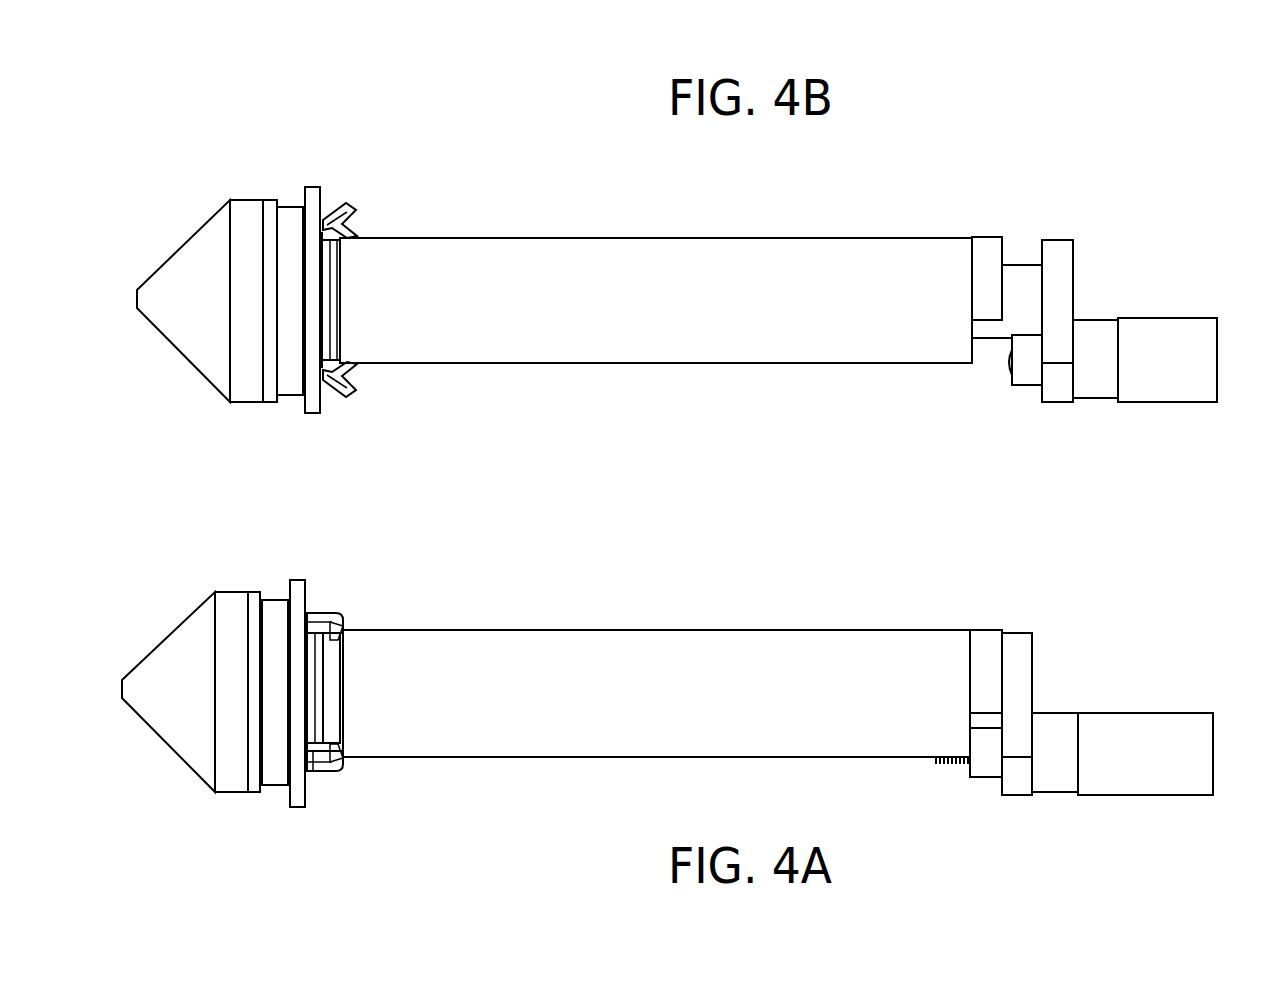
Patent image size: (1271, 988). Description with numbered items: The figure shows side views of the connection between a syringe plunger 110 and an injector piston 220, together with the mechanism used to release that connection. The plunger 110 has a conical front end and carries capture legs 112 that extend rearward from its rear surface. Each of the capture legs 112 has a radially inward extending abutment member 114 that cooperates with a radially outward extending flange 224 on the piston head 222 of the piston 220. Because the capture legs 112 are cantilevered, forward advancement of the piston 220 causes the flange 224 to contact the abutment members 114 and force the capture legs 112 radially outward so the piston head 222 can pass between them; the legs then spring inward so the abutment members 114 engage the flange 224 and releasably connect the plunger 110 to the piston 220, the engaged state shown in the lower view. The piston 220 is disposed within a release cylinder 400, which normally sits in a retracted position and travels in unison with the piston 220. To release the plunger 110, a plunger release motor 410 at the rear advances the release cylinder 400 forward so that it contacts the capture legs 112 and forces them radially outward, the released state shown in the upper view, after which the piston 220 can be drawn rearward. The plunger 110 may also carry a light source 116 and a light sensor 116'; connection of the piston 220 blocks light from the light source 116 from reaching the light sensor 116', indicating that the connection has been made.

In FIG. 4B, the plunger 110 is at (200, 218).
In FIG. 4A, the plunger 110 is at (200, 782).
In FIG. 4B, the capture legs 112 is at (333, 215).
In FIG. 4A, the capture legs 112 is at (320, 612).
In FIG. 4B, the abutment members 114 is at (355, 217).
In FIG. 4A, the abutment members 114 is at (342, 628).
In FIG. 4B, the light source 116 is at (252, 231).
In FIG. 4B, the light sensor 116' is at (413, 381).
In FIG. 4A, the piston 220 is at (337, 665).
In FIG. 4B, the piston head 222 is at (333, 290).
In FIG. 4A, the piston head 222 is at (317, 685).
In FIG. 4A, the flange 224 is at (316, 768).
In FIG. 4B, the release cylinder 400 is at (742, 365).
In FIG. 4A, the release cylinder 400 is at (732, 737).
In FIG. 4B, the plunger release motor 410 is at (1163, 405).
In FIG. 4A, the plunger release motor 410 is at (1145, 805).